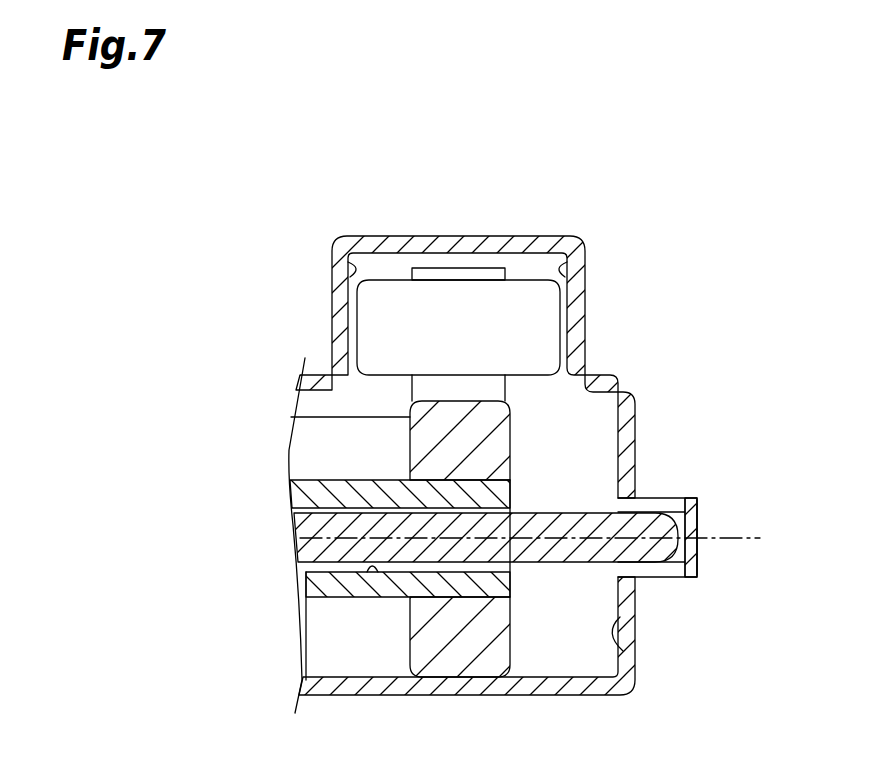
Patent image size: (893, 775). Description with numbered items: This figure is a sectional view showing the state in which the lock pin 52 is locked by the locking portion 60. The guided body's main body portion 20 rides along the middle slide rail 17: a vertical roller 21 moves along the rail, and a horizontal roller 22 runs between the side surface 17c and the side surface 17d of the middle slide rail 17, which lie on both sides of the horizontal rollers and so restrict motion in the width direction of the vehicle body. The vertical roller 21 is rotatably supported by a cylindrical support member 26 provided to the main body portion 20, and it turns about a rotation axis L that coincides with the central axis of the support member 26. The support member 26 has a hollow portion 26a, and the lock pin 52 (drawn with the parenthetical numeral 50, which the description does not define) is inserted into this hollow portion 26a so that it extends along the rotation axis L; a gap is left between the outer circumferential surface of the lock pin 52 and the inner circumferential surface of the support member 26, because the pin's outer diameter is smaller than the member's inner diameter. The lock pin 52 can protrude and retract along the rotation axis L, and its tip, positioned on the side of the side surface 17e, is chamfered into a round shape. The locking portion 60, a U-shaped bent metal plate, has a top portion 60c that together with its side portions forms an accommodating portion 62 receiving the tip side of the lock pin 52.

The middle slide rail 17 is at (367, 232).
The side surface 17c is at (356, 270).
The side surface 17d is at (559, 272).
The side surface 17e is at (633, 652).
The main body portion 20 is at (305, 440).
The vertical roller 21 is at (493, 422).
The horizontal roller 22 is at (523, 297).
The support member 26 is at (346, 590).
The hollow portion 26a is at (374, 575).
The shaft assembly 50 is at (648, 525).
The lock pin 52 is at (521, 485).
The locking portion 60 is at (704, 513).
The top portion 60c is at (700, 565).
The accommodating portion 62 is at (662, 575).
The rotation axis L is at (730, 540).